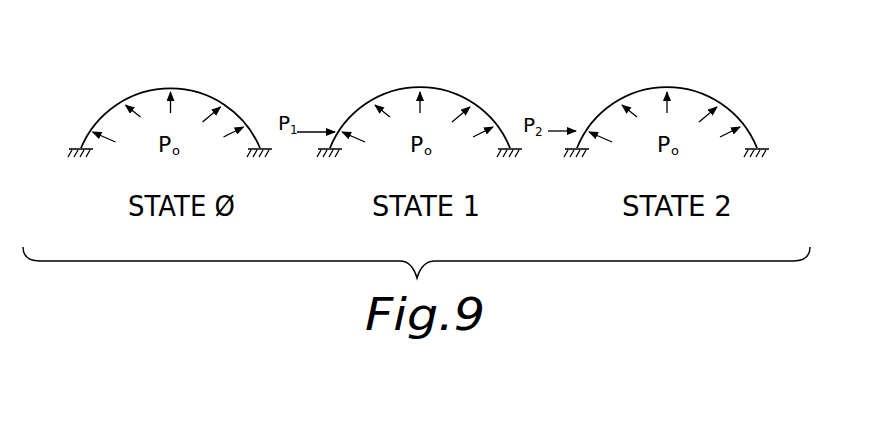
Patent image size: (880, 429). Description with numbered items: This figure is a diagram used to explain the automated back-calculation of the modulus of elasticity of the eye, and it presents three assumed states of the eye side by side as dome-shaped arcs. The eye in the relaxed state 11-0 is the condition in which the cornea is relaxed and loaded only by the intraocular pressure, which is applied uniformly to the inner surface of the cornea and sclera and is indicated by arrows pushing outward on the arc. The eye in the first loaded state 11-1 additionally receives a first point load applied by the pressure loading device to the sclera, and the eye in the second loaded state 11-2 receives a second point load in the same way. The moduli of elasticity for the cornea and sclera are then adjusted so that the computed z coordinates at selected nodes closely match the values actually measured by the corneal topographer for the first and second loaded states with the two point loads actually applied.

The eye in State 0 11-0 is at (205, 80).
The eye in State 1 11-1 is at (420, 75).
The eye in State 2 11-2 is at (659, 78).